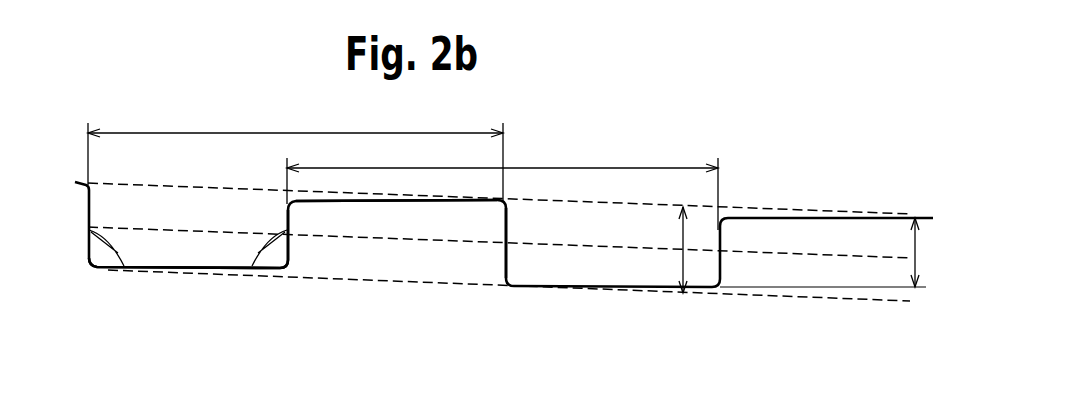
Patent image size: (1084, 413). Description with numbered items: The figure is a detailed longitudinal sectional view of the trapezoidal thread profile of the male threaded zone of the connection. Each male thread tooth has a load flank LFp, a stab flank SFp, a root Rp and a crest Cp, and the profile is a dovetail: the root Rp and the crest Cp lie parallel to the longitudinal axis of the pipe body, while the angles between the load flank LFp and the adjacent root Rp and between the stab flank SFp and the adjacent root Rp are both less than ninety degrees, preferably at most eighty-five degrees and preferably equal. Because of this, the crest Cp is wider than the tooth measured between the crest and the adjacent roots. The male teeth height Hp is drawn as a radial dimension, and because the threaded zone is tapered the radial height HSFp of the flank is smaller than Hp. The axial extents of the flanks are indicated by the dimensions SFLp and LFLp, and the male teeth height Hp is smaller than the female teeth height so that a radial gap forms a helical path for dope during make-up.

The stabbing flank length of pin thread SFLp is at (295, 150).
The load flank length of pin thread LFLp is at (502, 181).
The load flank LFp is at (286, 222).
The root Rp is at (208, 268).
The crest Cp is at (341, 200).
The stab flank SFp is at (506, 253).
The male teeth height Hp is at (683, 260).
The radial height of the male load flank HSFp is at (915, 250).